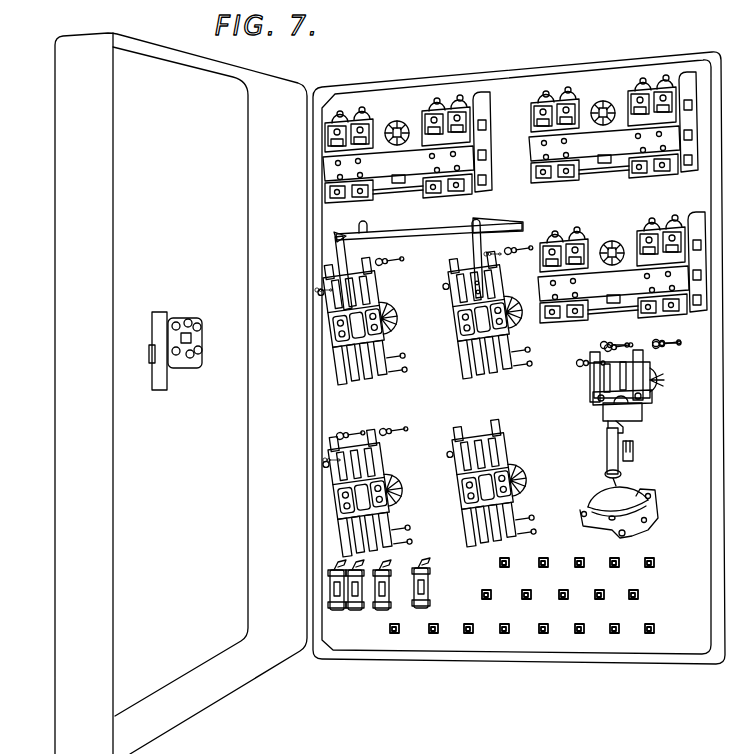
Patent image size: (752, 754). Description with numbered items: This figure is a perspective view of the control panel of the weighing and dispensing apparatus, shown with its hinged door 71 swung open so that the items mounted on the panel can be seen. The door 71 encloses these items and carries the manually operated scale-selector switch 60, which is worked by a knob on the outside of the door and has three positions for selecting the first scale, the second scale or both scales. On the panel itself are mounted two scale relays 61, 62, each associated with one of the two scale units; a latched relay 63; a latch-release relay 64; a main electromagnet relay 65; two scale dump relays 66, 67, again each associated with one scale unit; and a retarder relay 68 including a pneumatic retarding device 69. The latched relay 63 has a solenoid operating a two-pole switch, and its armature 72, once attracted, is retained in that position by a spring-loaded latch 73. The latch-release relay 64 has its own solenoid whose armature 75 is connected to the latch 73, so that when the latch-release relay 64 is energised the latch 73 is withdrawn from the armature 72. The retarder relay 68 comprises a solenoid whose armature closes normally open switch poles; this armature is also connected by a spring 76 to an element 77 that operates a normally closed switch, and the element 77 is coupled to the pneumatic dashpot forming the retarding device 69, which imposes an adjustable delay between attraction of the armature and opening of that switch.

The scale-selector switch 60 is at (187, 312).
The scale relay 61 is at (394, 104).
The scale relay 62 is at (606, 87).
The latched relay 63 is at (451, 336).
The latch-release relay 64 is at (343, 396).
The main electromagnet relay 65 is at (616, 228).
The scale dump relay 66 is at (394, 516).
The scale dump relay 67 is at (449, 466).
The retarder relay 68 is at (657, 401).
The pneumatic retarding device 69 is at (657, 519).
The hinged door 71 is at (250, 694).
The armature 72 is at (467, 241).
The latch 73 is at (341, 232).
The armature 75 is at (341, 254).
The spring 76 is at (606, 462).
The element 77 is at (627, 468).